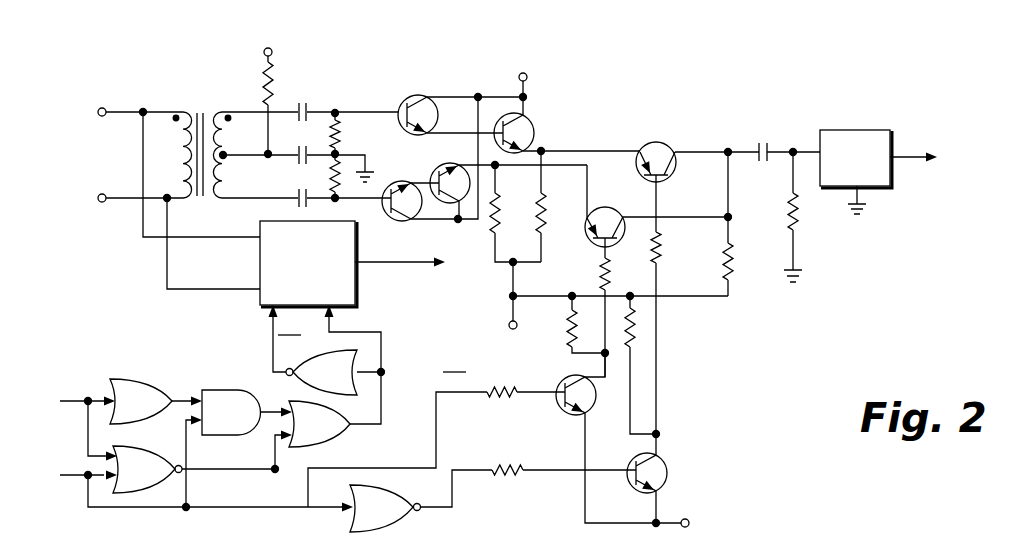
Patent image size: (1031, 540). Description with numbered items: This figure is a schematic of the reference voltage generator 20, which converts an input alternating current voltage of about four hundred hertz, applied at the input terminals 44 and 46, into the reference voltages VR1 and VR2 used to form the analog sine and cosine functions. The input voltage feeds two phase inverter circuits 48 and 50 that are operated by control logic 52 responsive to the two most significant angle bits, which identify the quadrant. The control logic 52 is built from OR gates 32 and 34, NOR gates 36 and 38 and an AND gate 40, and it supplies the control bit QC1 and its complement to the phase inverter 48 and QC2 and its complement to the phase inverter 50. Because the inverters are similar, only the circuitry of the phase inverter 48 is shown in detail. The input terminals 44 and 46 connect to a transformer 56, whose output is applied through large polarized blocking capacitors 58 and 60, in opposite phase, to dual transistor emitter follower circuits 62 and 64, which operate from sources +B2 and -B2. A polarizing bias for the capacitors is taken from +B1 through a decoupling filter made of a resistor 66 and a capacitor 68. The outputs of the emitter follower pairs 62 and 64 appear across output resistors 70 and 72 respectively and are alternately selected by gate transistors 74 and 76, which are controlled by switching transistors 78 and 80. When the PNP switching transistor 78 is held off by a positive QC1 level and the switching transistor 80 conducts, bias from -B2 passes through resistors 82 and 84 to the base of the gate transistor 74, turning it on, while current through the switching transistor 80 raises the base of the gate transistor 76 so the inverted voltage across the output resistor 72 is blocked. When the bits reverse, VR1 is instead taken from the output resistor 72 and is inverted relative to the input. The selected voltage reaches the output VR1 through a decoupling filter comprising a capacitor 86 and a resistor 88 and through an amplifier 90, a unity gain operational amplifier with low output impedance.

The reference voltage generator 20 is at (464, 331).
The OR gate 32 is at (140, 379).
The OR gate 34 is at (328, 447).
The NOR gate 36 is at (146, 449).
The NOR gate 38 is at (343, 352).
The AND gate 40 is at (225, 390).
The input terminal 44 is at (106, 116).
The input terminal 46 is at (105, 194).
The phase inverter circuit 48 is at (600, 141).
The phase inverter circuit 50 is at (356, 226).
The control logic 52 is at (240, 496).
The transformer 56 is at (203, 106).
The blocking capacitor 58 is at (307, 102).
The blocking capacitor 60 is at (300, 190).
The dual transistor emitter follower circuit 62 is at (400, 99).
The dual transistor emitter follower circuit 64 is at (417, 174).
The resistor 66 is at (275, 75).
The capacitor 68 is at (300, 147).
The output resistor 70 is at (551, 216).
The output resistor 72 is at (503, 216).
The gate transistor 74 is at (653, 143).
The gate transistor 76 is at (600, 210).
The switching transistor 78 is at (658, 474).
The switching transistor 80 is at (560, 405).
The resistor 82 is at (636, 320).
The resistor 84 is at (665, 255).
The capacitor 86 is at (762, 168).
The resistor 88 is at (805, 226).
The amplifier 90 is at (848, 130).